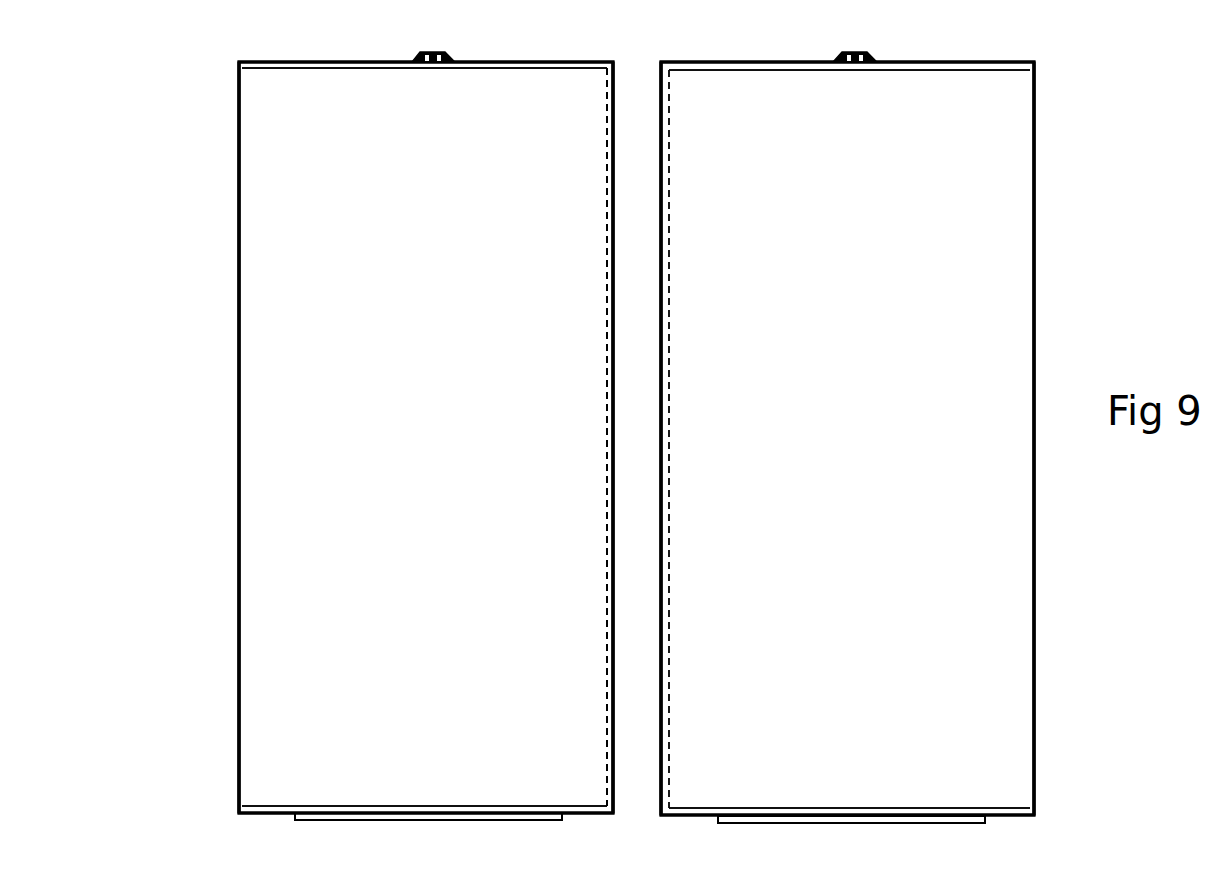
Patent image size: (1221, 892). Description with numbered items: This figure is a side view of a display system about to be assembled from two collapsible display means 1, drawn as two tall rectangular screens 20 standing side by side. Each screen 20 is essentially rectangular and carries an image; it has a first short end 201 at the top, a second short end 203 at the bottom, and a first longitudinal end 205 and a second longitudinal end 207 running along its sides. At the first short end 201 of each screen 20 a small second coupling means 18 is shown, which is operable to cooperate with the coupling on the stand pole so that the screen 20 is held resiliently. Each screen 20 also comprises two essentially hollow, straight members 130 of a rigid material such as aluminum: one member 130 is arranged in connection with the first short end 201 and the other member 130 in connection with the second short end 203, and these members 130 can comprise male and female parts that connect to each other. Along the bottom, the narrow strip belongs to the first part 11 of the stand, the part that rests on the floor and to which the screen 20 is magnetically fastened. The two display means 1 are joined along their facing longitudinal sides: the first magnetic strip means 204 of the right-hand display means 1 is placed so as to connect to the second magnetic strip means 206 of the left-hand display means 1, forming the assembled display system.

The collapsible display means 1 is at (172, 155).
The first part 11 is at (562, 818).
The second coupling means 18 is at (452, 56).
The screen 20 is at (636, 438).
The straight member 130 is at (328, 70).
The first short end 201 is at (478, 70).
The second short end 203 is at (408, 805).
The first magnetic strip means 204 is at (241, 470).
The first longitudinal end 205 is at (670, 583).
The second magnetic strip means 206 is at (604, 488).
The second longitudinal end 207 is at (604, 600).